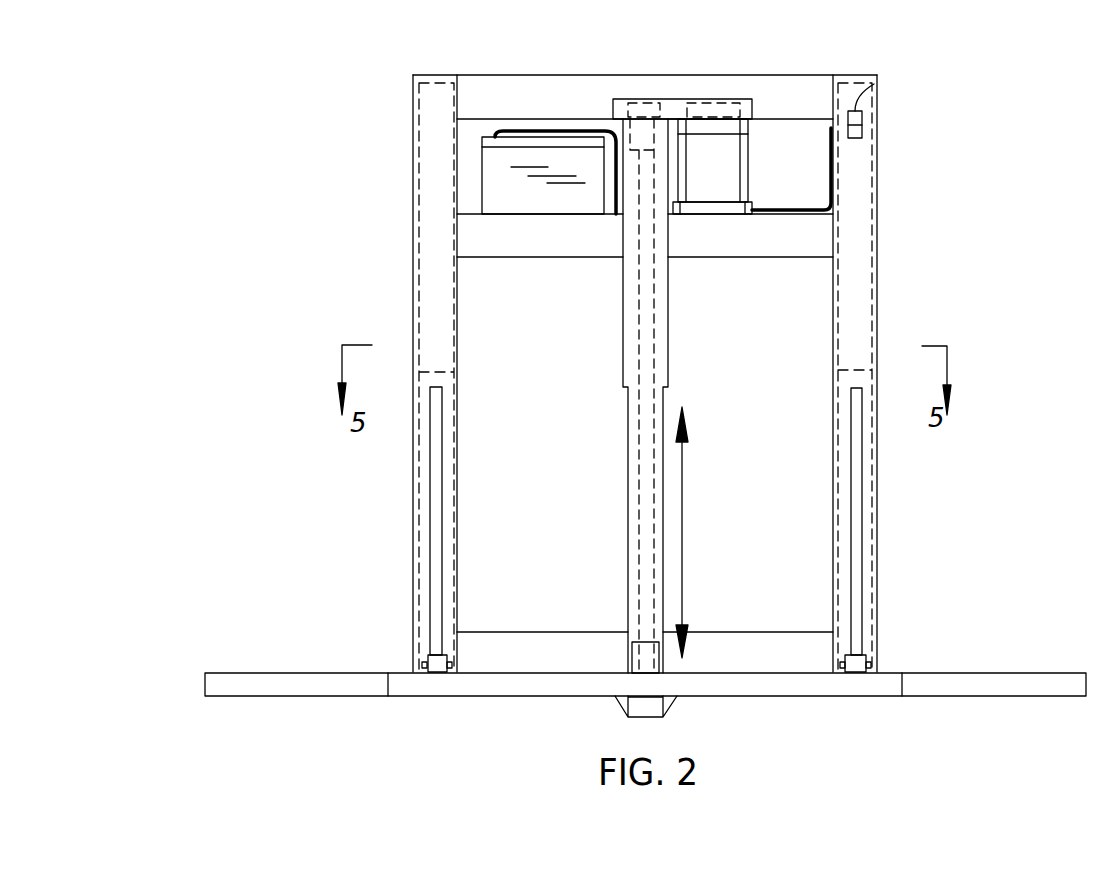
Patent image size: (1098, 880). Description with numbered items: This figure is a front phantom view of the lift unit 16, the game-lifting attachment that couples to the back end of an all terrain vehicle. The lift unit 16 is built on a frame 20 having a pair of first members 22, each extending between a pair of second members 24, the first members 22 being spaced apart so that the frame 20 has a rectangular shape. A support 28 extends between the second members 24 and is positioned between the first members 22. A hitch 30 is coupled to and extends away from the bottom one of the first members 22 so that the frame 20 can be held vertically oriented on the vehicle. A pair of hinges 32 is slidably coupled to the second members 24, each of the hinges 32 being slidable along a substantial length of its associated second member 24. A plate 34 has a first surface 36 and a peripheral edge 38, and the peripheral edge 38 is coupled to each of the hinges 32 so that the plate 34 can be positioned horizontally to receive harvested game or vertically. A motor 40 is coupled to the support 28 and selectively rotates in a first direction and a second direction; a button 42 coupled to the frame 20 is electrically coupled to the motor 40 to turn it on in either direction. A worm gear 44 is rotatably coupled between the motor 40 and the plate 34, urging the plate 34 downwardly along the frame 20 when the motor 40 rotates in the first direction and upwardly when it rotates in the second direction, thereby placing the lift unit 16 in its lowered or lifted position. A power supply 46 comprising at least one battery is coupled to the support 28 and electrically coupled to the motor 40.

The lift unit 16 is at (224, 99).
The frame 20 is at (413, 74).
The first members 22 is at (528, 74).
The second members 24 is at (415, 277).
The support 28 is at (469, 240).
The hitch 30 is at (667, 717).
The hinges 32 is at (430, 652).
The plate 34 is at (205, 672).
The first surface 36 is at (252, 672).
The peripheral edge 38 is at (412, 687).
The motor 40 is at (718, 150).
The button 42 is at (878, 80).
The worm gear 44 is at (640, 172).
The power supply 46 is at (482, 159).